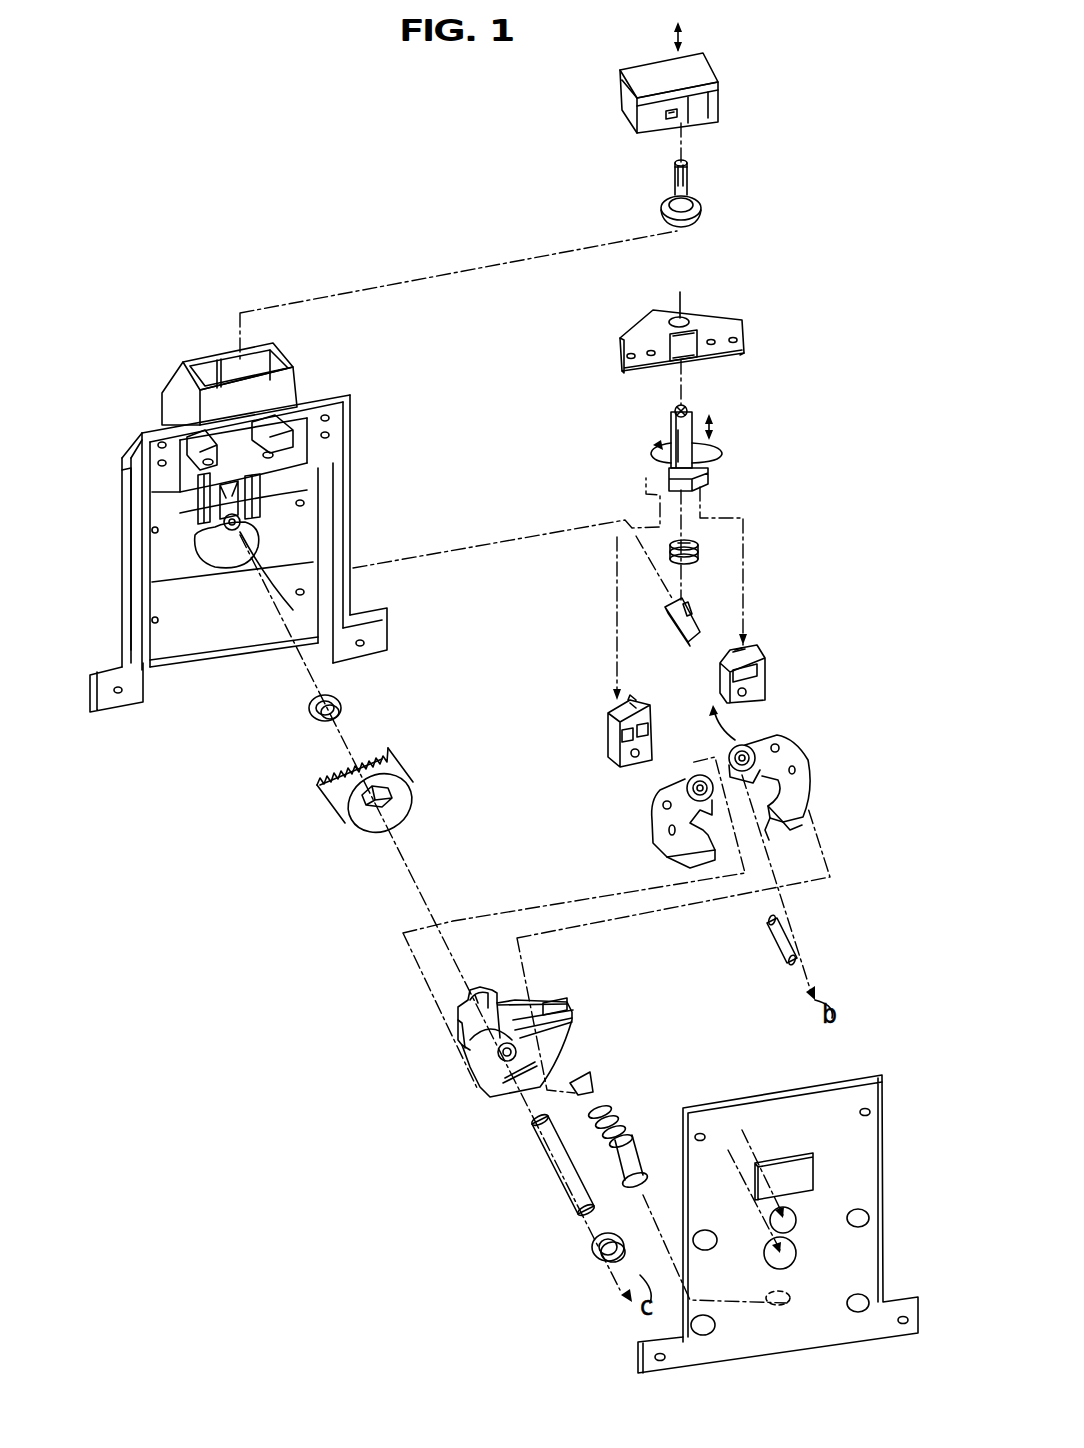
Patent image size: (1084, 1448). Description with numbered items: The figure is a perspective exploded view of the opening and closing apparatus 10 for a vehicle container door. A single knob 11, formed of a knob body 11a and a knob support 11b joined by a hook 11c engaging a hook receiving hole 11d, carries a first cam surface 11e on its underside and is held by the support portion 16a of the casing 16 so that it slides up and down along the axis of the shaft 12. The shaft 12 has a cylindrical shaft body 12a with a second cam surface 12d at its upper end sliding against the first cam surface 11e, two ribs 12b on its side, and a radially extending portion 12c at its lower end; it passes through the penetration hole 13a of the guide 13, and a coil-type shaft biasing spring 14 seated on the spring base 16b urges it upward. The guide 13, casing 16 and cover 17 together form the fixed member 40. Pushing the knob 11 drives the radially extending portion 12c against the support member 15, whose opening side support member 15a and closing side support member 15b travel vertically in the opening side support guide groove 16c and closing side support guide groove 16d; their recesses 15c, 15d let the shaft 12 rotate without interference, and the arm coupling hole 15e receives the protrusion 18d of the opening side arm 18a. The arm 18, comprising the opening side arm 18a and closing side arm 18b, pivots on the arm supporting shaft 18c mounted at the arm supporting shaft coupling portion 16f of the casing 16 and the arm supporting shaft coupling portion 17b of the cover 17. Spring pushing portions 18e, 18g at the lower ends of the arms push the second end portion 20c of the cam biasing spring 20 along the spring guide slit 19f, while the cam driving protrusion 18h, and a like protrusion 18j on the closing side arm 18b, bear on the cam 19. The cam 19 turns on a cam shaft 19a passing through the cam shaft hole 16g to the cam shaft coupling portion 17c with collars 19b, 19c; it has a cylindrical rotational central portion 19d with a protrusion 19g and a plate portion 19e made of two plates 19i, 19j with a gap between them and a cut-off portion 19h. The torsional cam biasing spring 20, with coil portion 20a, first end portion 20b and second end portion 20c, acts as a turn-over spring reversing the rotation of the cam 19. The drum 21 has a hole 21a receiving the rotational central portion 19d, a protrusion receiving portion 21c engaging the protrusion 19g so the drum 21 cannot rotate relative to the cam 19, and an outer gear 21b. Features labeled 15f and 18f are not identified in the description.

The opening and closing apparatus 10 is at (612, 128).
The knob 11 is at (790, 90).
The knob body 11a is at (705, 112).
The knob support 11b is at (695, 203).
The hook 11c is at (675, 168).
The hook receiving hole 11d is at (628, 125).
The first cam surface 11e is at (678, 230).
The shaft 12 is at (672, 436).
The shaft body 12a is at (692, 425).
The rib 12b is at (654, 452).
The radially extending portion 12c is at (709, 478).
The second cam surface 12d is at (677, 410).
The guide 13 is at (744, 340).
The penetration hole 13a is at (684, 320).
The shaft biasing spring 14 is at (698, 558).
The support member 15 is at (766, 690).
The opening side support member 15a is at (755, 656).
The closing side support member 15b is at (612, 711).
The recess 15c is at (730, 650).
The recess 15d is at (646, 716).
The arm coupling hole 15e is at (750, 694).
The switch screw 15f is at (616, 762).
The casing 16 is at (126, 538).
The support portion 16a is at (207, 358).
The spring base 16b is at (670, 632).
The opening side support guide groove 16c is at (307, 462).
The closing side support guide groove 16d is at (198, 480).
The arm supporting shaft coupling portion 16f is at (262, 515).
The cam shaft hole 16g is at (215, 566).
The cover 17 is at (775, 1105).
The arm supporting shaft coupling portion 17b is at (802, 1214).
The cam shaft coupling portion 17c is at (800, 1255).
The arm 18 is at (810, 791).
The opening side arm 18a is at (808, 802).
The closing side arm 18b is at (652, 821).
The arm supporting shaft 18c is at (768, 948).
The protrusion 18d is at (782, 752).
The spring pushing portion 18e is at (779, 840).
The lever hole 18f is at (664, 805).
The spring pushing portion 18g is at (690, 858).
The cam driving protrusion 18h is at (797, 771).
The protrusion 18j is at (669, 832).
The cam 19 is at (490, 1095).
The cam shaft 19a is at (556, 1196).
The collar 19b is at (591, 1252).
The collar 19c is at (310, 693).
The rotational central portion 19d is at (490, 998).
The plate portion 19e is at (460, 1052).
The spring guide slit 19f is at (508, 1084).
The protrusion 19g is at (548, 1000).
The cut-off portion 19h is at (466, 1072).
The plate 19i is at (575, 1020).
The plate 19j is at (566, 1006).
The cam biasing spring 20 is at (598, 1115).
The coil portion 20a is at (626, 1112).
The first end portion 20b is at (641, 1170).
The second end portion 20c is at (580, 1080).
The drum 21 is at (360, 830).
The hole 21a is at (405, 784).
The gear 21b is at (372, 746).
The protrusion receiving portion 21c is at (362, 798).
The fixed member 40 is at (122, 632).